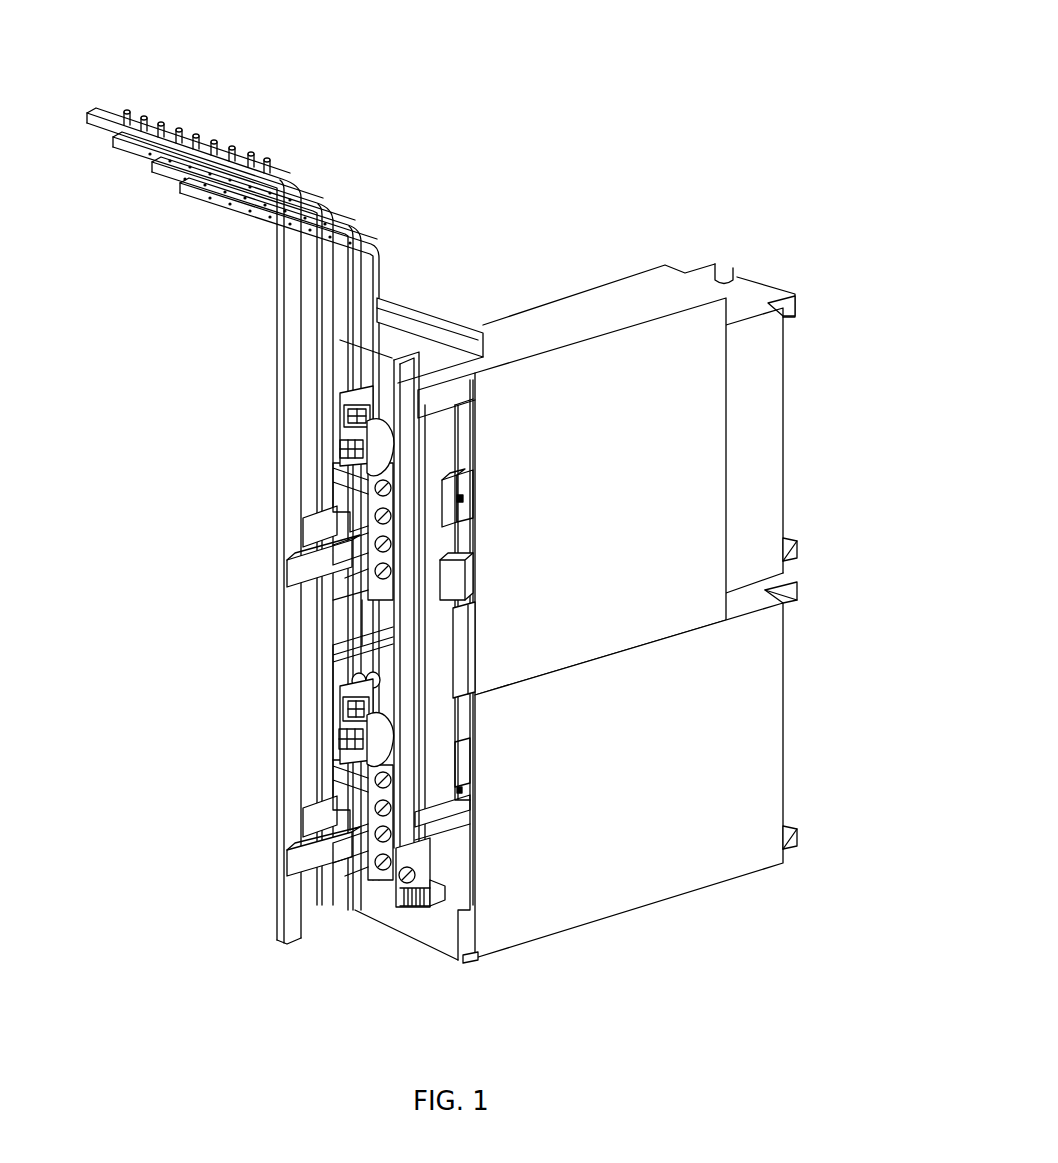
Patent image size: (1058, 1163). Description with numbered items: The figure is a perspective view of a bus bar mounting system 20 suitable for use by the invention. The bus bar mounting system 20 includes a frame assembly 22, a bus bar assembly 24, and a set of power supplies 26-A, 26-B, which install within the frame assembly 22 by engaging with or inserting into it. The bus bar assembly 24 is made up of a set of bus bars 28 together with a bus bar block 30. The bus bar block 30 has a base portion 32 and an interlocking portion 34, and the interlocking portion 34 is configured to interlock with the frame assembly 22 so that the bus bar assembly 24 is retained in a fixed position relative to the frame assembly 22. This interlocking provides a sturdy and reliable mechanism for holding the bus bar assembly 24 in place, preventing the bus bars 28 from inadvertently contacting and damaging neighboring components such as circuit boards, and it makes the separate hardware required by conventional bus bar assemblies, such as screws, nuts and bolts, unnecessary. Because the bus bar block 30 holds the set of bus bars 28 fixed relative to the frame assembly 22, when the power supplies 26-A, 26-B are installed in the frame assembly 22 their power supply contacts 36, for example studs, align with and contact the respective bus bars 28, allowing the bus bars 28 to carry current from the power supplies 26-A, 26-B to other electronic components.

The bus bar mounting system 20 is at (652, 77).
The frame assembly 22 is at (700, 410).
The bus bar assembly 24 is at (108, 332).
The power supply 26-A is at (752, 484).
The power supply 26-B is at (755, 746).
The bus bars 28 is at (360, 165).
The bus bar block 30 is at (445, 733).
The base portion 32 is at (447, 652).
The interlocking portion 34 is at (462, 580).
The power supply contacts 36 is at (408, 876).